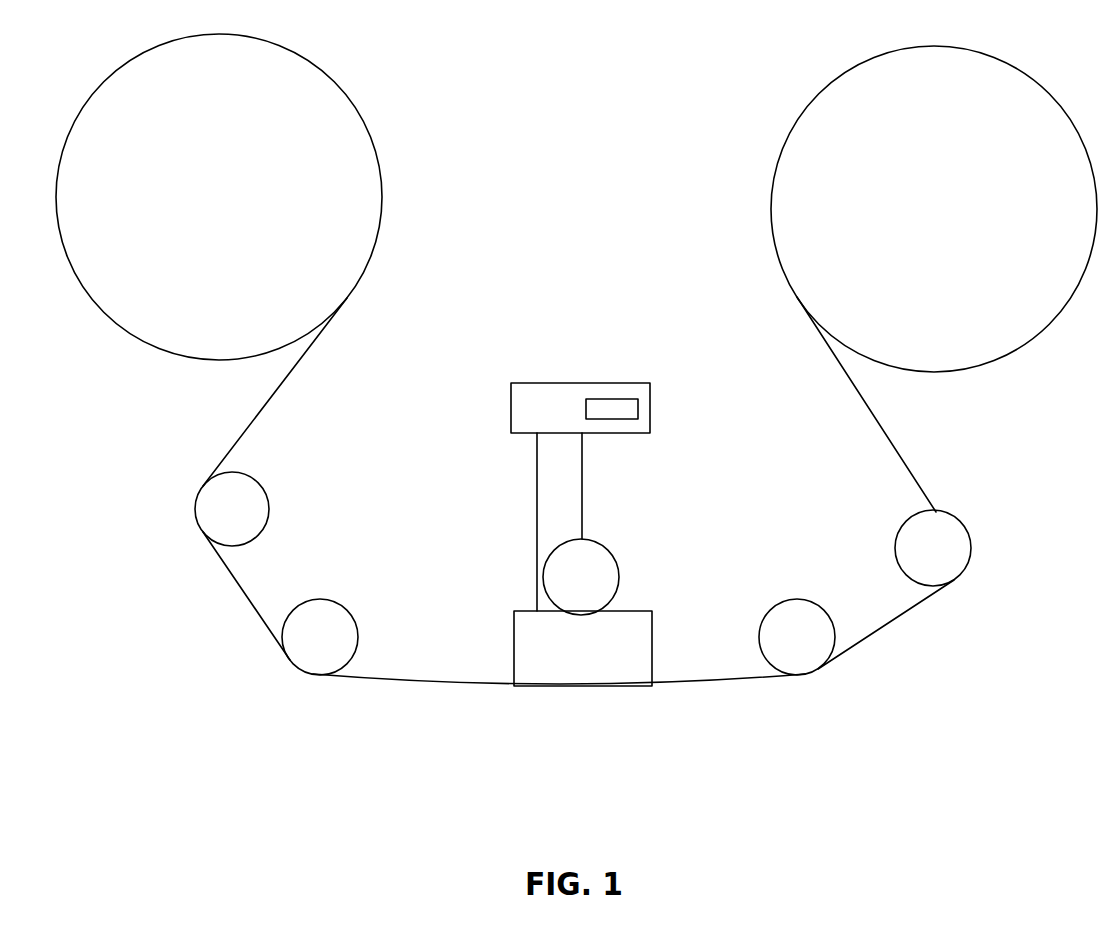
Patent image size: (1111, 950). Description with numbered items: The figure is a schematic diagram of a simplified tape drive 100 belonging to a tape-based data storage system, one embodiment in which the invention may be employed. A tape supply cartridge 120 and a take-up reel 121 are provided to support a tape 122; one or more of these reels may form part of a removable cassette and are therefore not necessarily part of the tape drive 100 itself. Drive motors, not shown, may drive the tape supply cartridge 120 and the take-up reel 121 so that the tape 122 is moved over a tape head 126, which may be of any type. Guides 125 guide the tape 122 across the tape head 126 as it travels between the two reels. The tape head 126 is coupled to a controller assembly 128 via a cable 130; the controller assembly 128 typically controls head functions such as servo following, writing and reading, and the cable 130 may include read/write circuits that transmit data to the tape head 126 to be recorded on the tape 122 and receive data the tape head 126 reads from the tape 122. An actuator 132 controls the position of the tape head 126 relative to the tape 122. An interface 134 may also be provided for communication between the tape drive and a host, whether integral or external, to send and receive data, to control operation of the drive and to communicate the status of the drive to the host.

The tape drive 100 is at (165, 425).
The tape supply cartridge 120 is at (380, 163).
The take-up reel 121 is at (1038, 333).
The tape 122 is at (420, 681).
The guides 125 is at (322, 598).
The tape head 126 is at (653, 647).
The controller assembly 128 is at (580, 383).
The cable 130 is at (537, 573).
The actuator 132 is at (610, 548).
The interface 134 is at (628, 399).